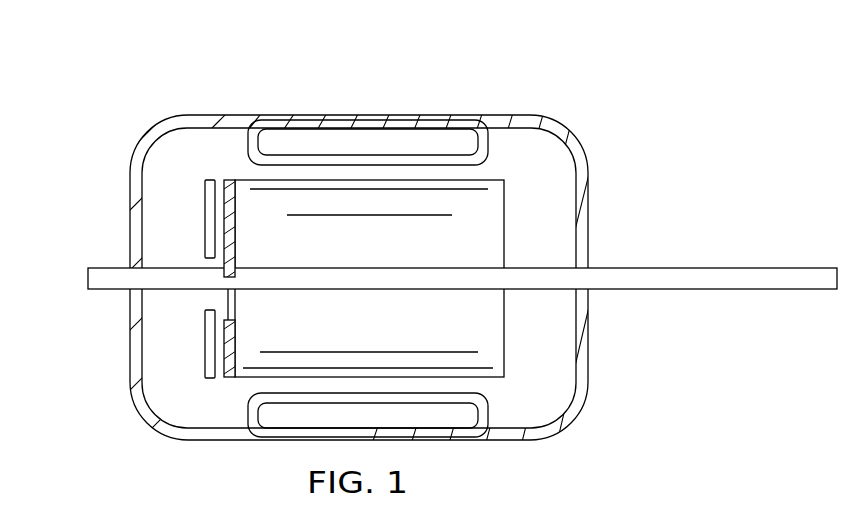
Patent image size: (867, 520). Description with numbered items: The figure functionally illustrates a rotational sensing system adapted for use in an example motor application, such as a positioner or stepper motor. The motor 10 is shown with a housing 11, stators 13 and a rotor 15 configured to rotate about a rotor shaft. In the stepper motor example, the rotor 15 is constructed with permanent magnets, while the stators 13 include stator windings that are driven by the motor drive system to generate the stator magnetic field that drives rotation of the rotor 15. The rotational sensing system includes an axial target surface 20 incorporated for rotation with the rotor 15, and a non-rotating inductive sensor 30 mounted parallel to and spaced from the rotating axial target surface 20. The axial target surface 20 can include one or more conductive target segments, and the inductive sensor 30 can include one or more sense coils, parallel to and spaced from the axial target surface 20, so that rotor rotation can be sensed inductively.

The motor 10 is at (445, 270).
The housing 11 is at (534, 124).
The stators 13 is at (368, 131).
The rotor 15 is at (378, 309).
The axial target surface 20 is at (198, 200).
The inductive sensor 30 is at (203, 222).